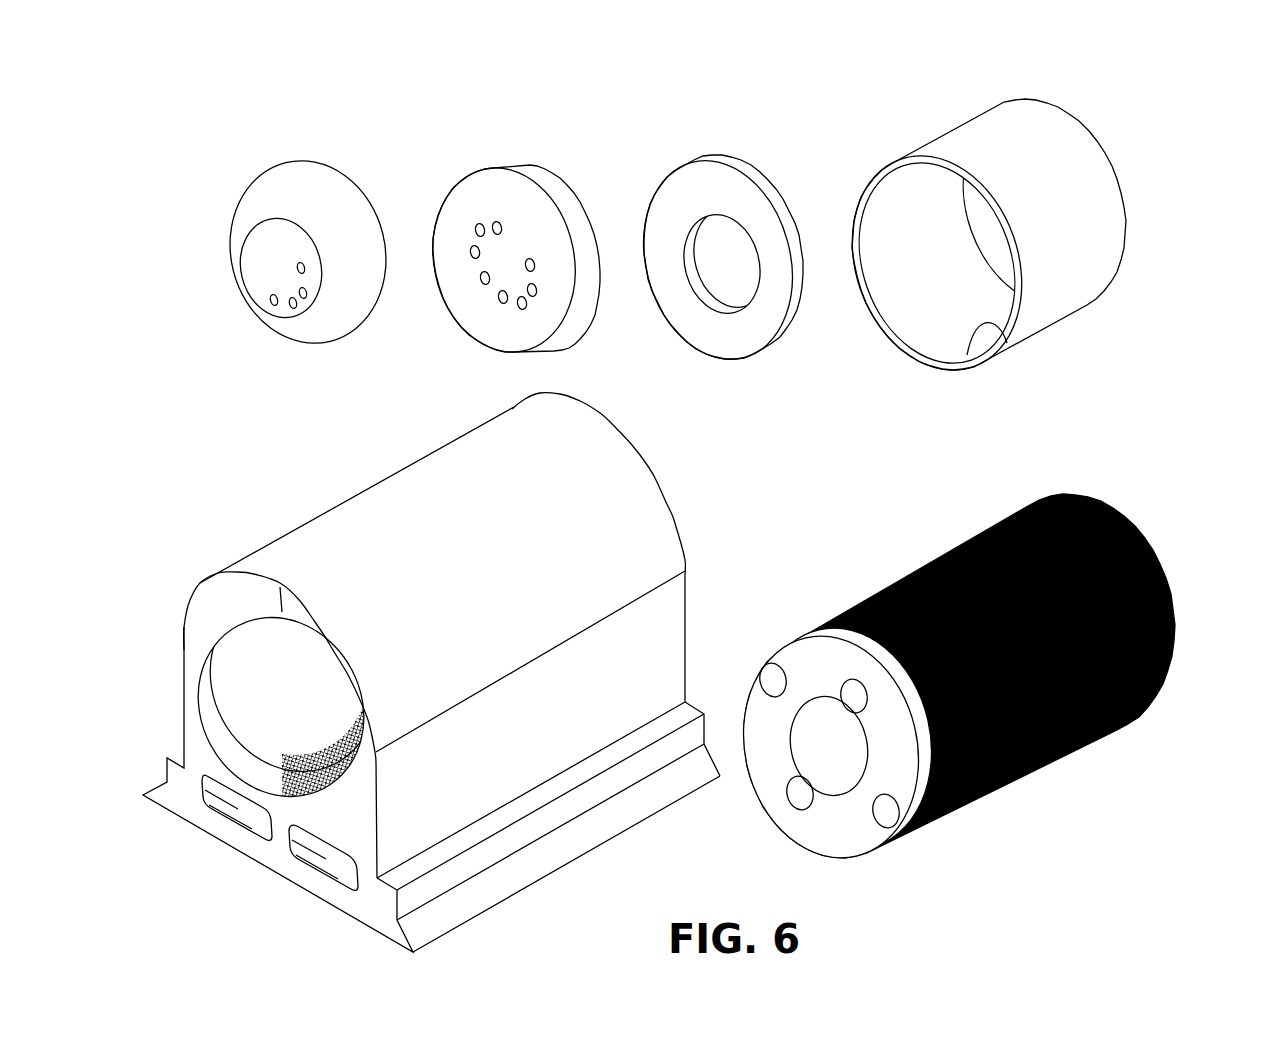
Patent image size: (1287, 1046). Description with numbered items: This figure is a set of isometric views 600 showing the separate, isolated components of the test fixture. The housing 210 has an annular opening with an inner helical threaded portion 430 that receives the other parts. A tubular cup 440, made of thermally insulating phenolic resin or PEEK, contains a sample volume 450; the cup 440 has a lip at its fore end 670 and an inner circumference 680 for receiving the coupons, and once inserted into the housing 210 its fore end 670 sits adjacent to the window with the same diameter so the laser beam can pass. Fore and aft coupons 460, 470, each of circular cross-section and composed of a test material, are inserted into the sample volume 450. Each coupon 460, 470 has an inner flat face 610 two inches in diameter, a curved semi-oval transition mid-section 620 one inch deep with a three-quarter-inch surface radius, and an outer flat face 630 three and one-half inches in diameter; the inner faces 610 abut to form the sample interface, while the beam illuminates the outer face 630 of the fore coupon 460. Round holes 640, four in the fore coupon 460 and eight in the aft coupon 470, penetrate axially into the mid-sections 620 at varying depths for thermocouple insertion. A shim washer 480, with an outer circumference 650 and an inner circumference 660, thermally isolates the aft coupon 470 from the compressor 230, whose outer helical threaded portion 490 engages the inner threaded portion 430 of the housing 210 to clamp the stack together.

The housing 210 is at (138, 435).
The compressor 230 is at (1197, 470).
The inner helical threaded portion 430 is at (268, 627).
The tubular cup 440 is at (1105, 90).
The sample volume 450 is at (940, 262).
The fore coupon 460 is at (385, 128).
The aft coupon 470 is at (592, 128).
The shim washer 480 is at (808, 128).
The outer helical threaded portion 490 is at (956, 527).
The set of isometric views 600 is at (1162, 322).
The inner flat face 610 is at (258, 249).
The curved semi-oval transition mid-section 620 is at (318, 328).
The outer flat face 630 is at (532, 337).
The round holes 640 is at (477, 224).
The outer circumference 650 is at (773, 345).
The inner circumference 660 is at (737, 232).
The fore end 670 is at (1097, 158).
The inner circumference 680 is at (983, 327).